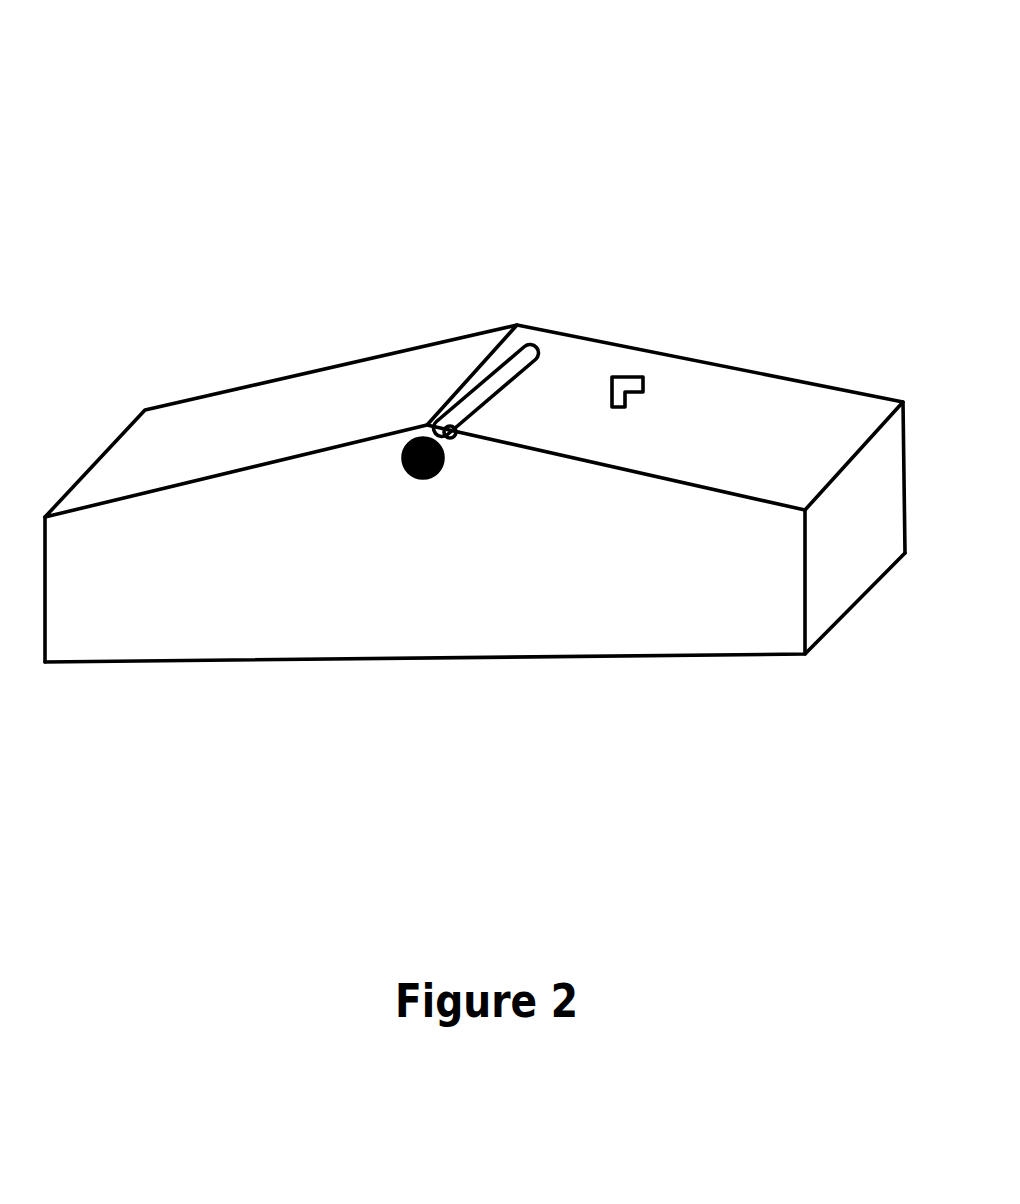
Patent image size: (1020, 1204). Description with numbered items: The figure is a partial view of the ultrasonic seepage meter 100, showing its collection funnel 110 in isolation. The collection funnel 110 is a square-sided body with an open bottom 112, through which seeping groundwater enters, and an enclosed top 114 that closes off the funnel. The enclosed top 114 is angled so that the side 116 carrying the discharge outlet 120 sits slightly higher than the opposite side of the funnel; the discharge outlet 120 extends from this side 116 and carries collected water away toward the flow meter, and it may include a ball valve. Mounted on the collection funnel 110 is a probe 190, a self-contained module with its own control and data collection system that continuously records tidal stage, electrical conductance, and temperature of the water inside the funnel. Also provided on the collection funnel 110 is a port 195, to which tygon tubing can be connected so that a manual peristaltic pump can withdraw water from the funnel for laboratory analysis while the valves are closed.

The ultrasonic seepage meter 100 is at (475, 435).
The collection funnel 110 is at (190, 425).
The open bottom 112 is at (432, 658).
The enclosed top 114 is at (452, 380).
The side 116 is at (597, 603).
The discharge outlet 120 is at (423, 477).
The probe 190 is at (512, 355).
The port 195 is at (643, 380).